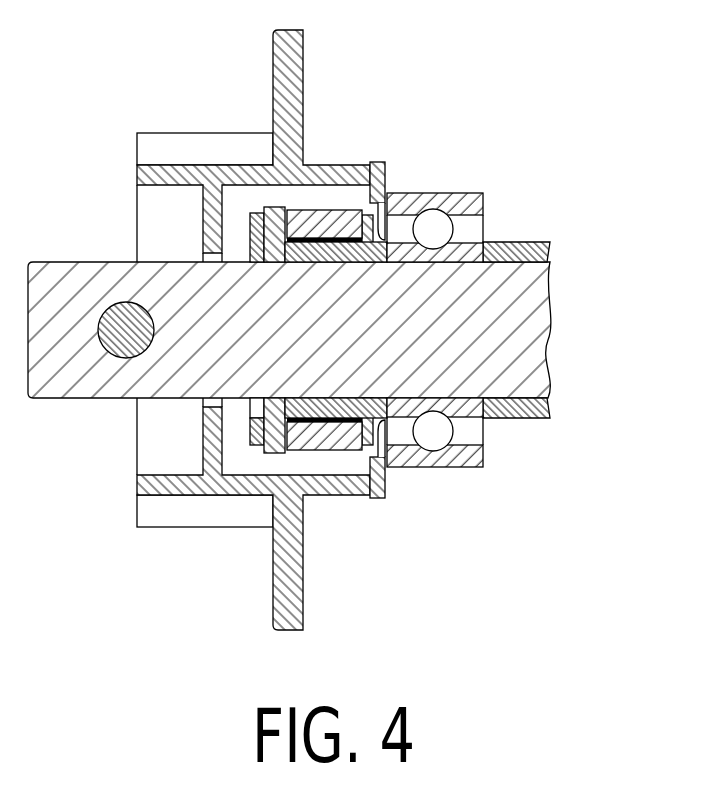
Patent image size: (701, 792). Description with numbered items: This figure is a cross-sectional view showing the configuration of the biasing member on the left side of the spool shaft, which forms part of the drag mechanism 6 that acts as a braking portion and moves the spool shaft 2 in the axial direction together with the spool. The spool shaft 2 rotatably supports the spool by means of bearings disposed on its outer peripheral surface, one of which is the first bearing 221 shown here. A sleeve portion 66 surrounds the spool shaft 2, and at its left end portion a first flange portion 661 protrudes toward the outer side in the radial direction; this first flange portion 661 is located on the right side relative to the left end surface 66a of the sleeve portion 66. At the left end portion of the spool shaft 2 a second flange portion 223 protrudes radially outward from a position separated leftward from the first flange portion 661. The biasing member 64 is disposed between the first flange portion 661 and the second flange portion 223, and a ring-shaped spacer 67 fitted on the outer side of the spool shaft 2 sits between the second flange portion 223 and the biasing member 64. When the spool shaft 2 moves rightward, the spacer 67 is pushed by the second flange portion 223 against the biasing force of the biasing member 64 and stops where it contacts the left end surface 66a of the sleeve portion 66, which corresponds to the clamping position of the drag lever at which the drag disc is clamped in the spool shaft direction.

The spool shaft 2 is at (515, 332).
The drag mechanism 6 is at (490, 173).
The biasing member 64 is at (318, 210).
The sleeve portion 66 is at (520, 242).
The left end surface 66a is at (277, 250).
The first flange portion 661 is at (385, 203).
The spacer 67 is at (273, 207).
The first bearing 221 is at (433, 467).
The second flange portion 223 is at (258, 213).